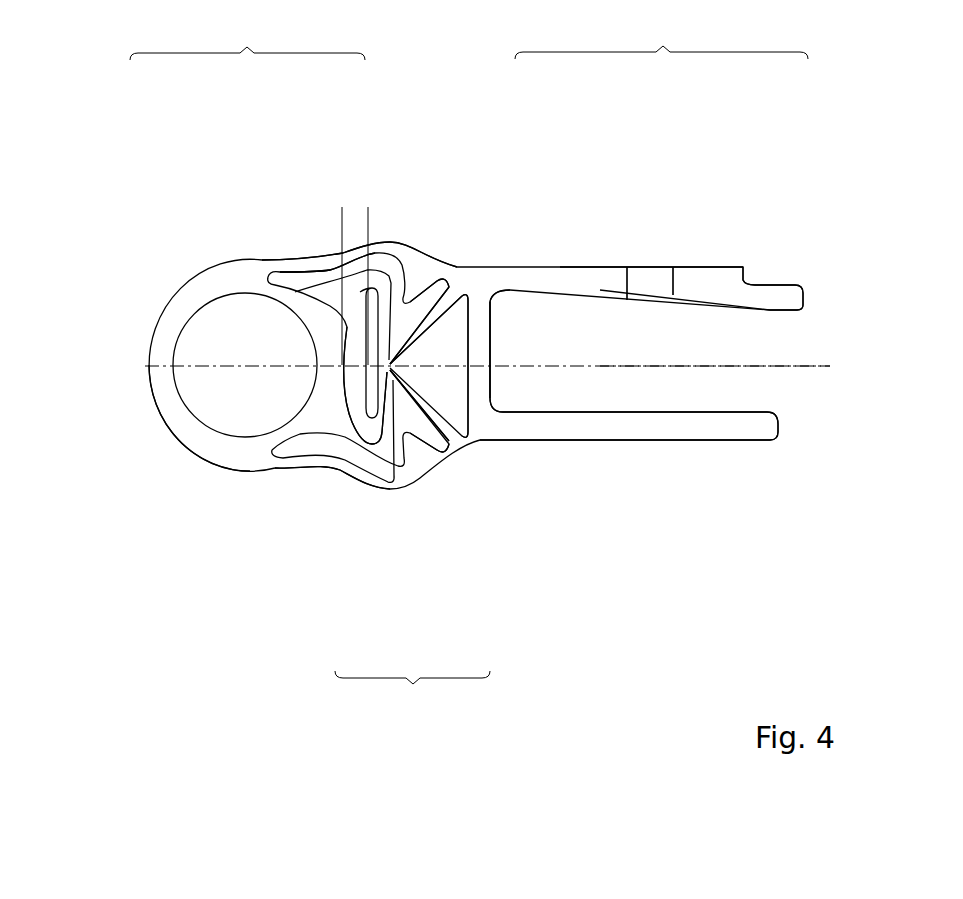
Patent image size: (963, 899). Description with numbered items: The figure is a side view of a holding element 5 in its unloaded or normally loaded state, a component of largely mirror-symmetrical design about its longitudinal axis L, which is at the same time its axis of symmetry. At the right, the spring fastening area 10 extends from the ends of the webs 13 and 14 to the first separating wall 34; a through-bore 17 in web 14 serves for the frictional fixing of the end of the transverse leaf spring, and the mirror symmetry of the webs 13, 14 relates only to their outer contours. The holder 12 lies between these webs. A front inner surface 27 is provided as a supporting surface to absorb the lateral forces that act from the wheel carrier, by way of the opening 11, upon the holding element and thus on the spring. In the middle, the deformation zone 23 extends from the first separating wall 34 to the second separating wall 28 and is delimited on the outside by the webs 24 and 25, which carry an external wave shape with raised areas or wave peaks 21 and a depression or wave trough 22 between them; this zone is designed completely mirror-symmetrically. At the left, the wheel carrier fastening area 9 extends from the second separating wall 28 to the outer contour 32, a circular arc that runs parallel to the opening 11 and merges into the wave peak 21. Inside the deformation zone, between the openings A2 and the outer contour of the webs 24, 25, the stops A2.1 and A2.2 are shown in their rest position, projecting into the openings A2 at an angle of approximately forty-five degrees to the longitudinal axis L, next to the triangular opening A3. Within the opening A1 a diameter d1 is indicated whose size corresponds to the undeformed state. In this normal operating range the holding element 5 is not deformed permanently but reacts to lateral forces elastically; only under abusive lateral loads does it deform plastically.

The holding element 5 is at (450, 92).
The wheel carrier fastening area 9 is at (247, 34).
The spring fastening area 10 is at (661, 33).
The opening 11 is at (215, 383).
The holder 12 is at (627, 380).
The web 13 is at (728, 427).
The web 14 is at (600, 283).
The through-bore 17 is at (677, 283).
The raised area, wave peak 21 is at (277, 260).
The depression, wave trough 22 is at (323, 252).
The deformation zone 23 is at (412, 695).
The web 24 is at (313, 260).
The web 25 is at (330, 455).
The front inner surface 27 is at (500, 385).
The second separating wall 28 is at (330, 330).
The outer contour 32 is at (178, 436).
The first separating wall 34 is at (557, 285).
The opening A1 is at (350, 387).
The opening A2 is at (478, 352).
The stop A2.1 is at (410, 286).
The stop A2.2 is at (400, 430).
The opening, triangular A3 is at (450, 393).
The diameter d1 is at (368, 212).
The longitudinal axis, axis of symmetry L is at (737, 360).